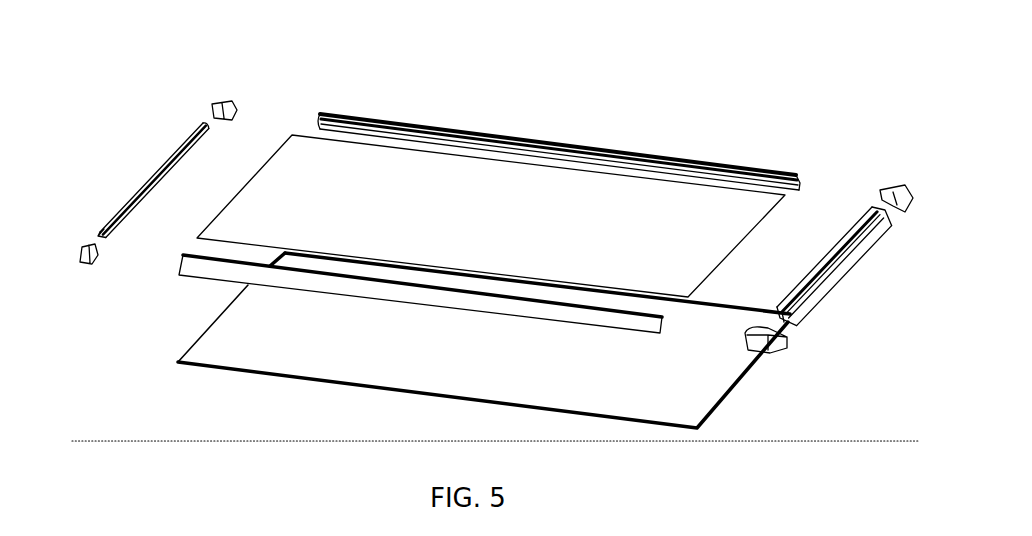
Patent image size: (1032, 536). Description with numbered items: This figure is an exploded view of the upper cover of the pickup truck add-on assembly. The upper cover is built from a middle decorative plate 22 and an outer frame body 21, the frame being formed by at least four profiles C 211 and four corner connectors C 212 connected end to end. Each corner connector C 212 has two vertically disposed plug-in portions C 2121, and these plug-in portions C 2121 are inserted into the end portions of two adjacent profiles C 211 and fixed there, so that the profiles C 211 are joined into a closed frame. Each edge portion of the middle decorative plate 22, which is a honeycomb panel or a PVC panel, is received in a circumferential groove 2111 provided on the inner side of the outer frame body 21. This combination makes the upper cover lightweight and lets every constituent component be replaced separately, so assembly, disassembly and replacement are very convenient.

The outer frame body 21 is at (186, 6).
The middle decorative plate 22 is at (316, 198).
The profile C 211 is at (136, 181).
The circumferential groove 2111 is at (551, 154).
The corner connector C 212 is at (204, 108).
The plug-in portion C 2121 is at (734, 356).